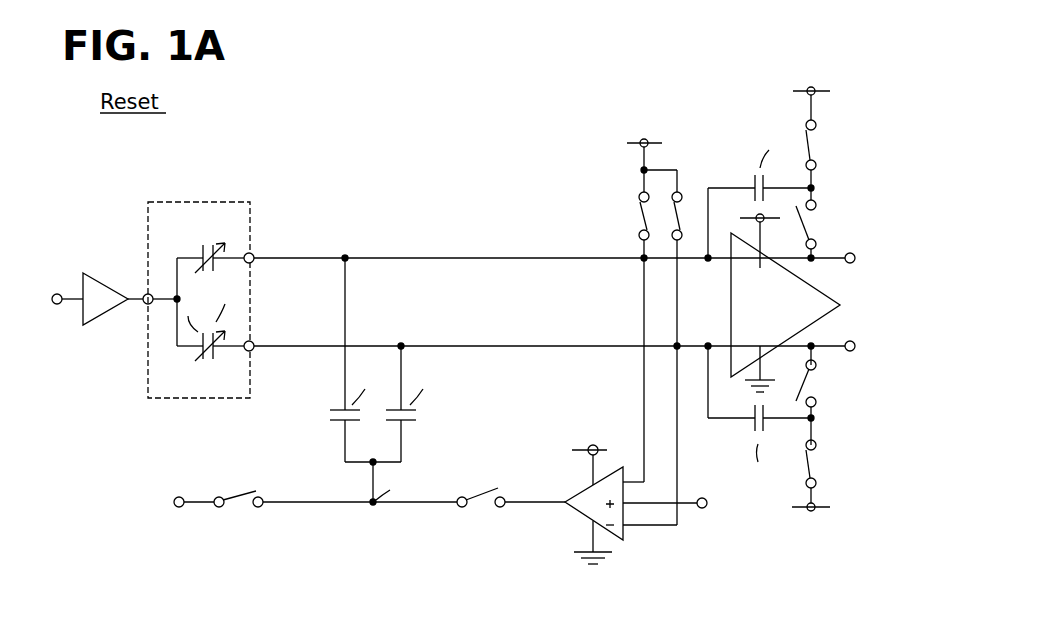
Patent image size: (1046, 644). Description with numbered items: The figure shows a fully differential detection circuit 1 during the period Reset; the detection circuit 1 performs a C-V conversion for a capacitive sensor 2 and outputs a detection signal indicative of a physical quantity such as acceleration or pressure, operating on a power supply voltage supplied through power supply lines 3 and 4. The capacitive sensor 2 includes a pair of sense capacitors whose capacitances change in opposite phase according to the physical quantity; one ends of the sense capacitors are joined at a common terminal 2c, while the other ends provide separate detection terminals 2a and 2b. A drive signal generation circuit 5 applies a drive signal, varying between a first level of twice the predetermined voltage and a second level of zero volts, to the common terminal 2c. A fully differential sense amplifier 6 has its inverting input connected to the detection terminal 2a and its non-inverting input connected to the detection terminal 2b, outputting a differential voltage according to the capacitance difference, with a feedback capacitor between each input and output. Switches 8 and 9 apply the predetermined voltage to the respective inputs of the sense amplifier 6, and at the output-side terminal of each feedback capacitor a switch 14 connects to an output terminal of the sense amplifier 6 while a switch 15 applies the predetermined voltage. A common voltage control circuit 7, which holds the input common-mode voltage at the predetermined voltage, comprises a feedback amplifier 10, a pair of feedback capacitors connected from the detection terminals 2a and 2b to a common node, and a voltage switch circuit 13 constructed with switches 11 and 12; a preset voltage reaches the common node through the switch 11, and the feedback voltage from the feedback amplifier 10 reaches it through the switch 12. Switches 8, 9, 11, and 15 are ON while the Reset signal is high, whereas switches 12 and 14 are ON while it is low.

The fully differential detection circuit 1 is at (522, 194).
The capacitive sensor 2 is at (200, 201).
The detection terminal 2a is at (253, 253).
The detection terminal 2b is at (253, 341).
The common terminal 2c is at (147, 294).
The power supply line 3 is at (600, 452).
The power supply line 4 is at (606, 552).
The drive signal generation circuit 5 is at (105, 283).
The fully differential sense amplifier 6 is at (729, 305).
The common voltage control circuit 7 is at (477, 325).
The switch 8 is at (633, 212).
The switch 9 is at (682, 212).
The feedback amplifier 10 is at (582, 488).
The switch 11 is at (240, 492).
The switch 12 is at (478, 486).
The voltage switch circuit 13 is at (438, 547).
The switch 14 is at (816, 222).
The switch 15 is at (816, 149).